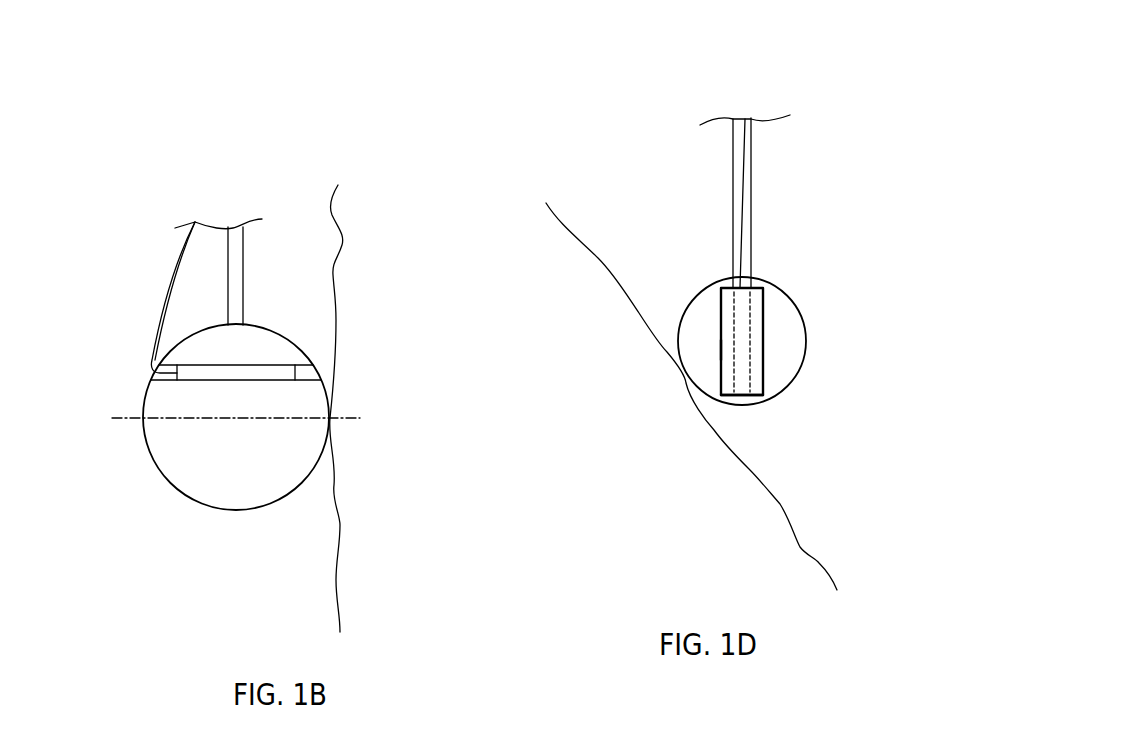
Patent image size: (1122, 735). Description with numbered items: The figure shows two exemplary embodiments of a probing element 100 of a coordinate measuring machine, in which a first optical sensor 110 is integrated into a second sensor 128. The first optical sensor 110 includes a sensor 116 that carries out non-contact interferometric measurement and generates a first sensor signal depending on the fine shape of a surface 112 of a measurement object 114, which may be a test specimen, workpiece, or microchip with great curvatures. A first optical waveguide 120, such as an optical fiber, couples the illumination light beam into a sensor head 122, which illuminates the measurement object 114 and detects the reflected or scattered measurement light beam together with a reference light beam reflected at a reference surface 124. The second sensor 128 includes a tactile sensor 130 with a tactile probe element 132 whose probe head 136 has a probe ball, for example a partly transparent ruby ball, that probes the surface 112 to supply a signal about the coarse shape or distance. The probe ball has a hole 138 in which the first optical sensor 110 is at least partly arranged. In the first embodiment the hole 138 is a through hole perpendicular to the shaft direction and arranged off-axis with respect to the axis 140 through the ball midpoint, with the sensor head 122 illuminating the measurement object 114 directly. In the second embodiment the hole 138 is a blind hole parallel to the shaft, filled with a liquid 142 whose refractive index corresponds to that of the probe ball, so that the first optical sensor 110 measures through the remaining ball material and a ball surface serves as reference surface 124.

In FIG. 1B, the probing element 100 is at (160, 138).
In FIG. 1D, the probing element 100 is at (846, 158).
In FIG. 1B, the first optical sensor 110 is at (196, 264).
In FIG. 1D, the first optical sensor 110 is at (835, 203).
In FIG. 1B, the surface 112 is at (396, 408).
In FIG. 1D, the surface 112 is at (725, 396).
In FIG. 1B, the measurement object 114 is at (330, 271).
In FIG. 1D, the measurement object 114 is at (803, 547).
In FIG. 1B, the sensor 116 is at (196, 264).
In FIG. 1D, the sensor 116 is at (835, 203).
In FIG. 1B, the first optical waveguide 120 is at (173, 265).
In FIG. 1D, the first optical waveguide 120 is at (752, 210).
In FIG. 1B, the sensor head 122 is at (235, 382).
In FIG. 1D, the sensor head 122 is at (742, 327).
In FIG. 1D, the reference surface 124 is at (742, 403).
In FIG. 1B, the second sensor 128 is at (295, 447).
In FIG. 1D, the second sensor 128 is at (707, 295).
In FIG. 1B, the tactile sensor 130 is at (295, 447).
In FIG. 1D, the tactile sensor 130 is at (707, 295).
In FIG. 1B, the tactile probe element 132 is at (295, 447).
In FIG. 1D, the tactile probe element 132 is at (707, 295).
In FIG. 1B, the probe head 136 is at (297, 490).
In FIG. 1D, the probe head 136 is at (708, 282).
In FIG. 1B, the hole 138 is at (203, 382).
In FIG. 1D, the hole 138 is at (763, 357).
In FIG. 1B, the axis 140 is at (258, 418).
In FIG. 1D, the liquid 142 is at (727, 348).